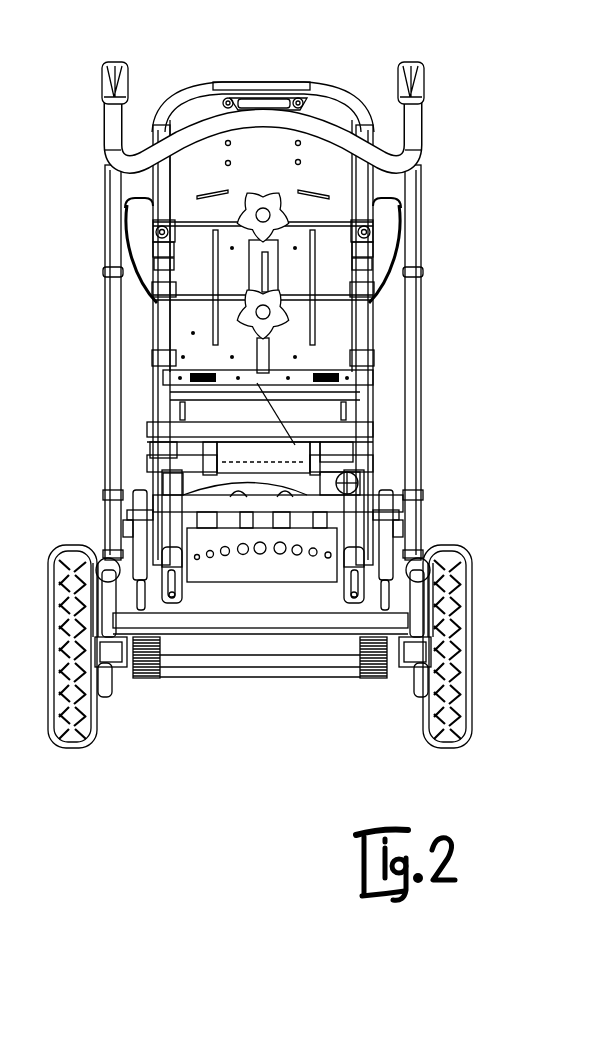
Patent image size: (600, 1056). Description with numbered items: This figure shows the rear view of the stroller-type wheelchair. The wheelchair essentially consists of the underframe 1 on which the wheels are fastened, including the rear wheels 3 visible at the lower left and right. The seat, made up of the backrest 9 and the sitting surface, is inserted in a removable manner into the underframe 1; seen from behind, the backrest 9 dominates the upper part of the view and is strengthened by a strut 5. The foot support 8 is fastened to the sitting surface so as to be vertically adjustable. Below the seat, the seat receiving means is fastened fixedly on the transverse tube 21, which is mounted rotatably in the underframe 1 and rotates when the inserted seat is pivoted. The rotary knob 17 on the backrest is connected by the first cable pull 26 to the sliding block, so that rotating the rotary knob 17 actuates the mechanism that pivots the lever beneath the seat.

The underframe 1 is at (412, 243).
The rear wheel 3 is at (452, 556).
The strut 5 is at (267, 150).
The foot support 8 is at (272, 558).
The backrest 9 is at (337, 115).
The rotary knob 17 is at (243, 196).
The transverse tube 21 is at (292, 423).
The first cable pull 26 is at (293, 409).